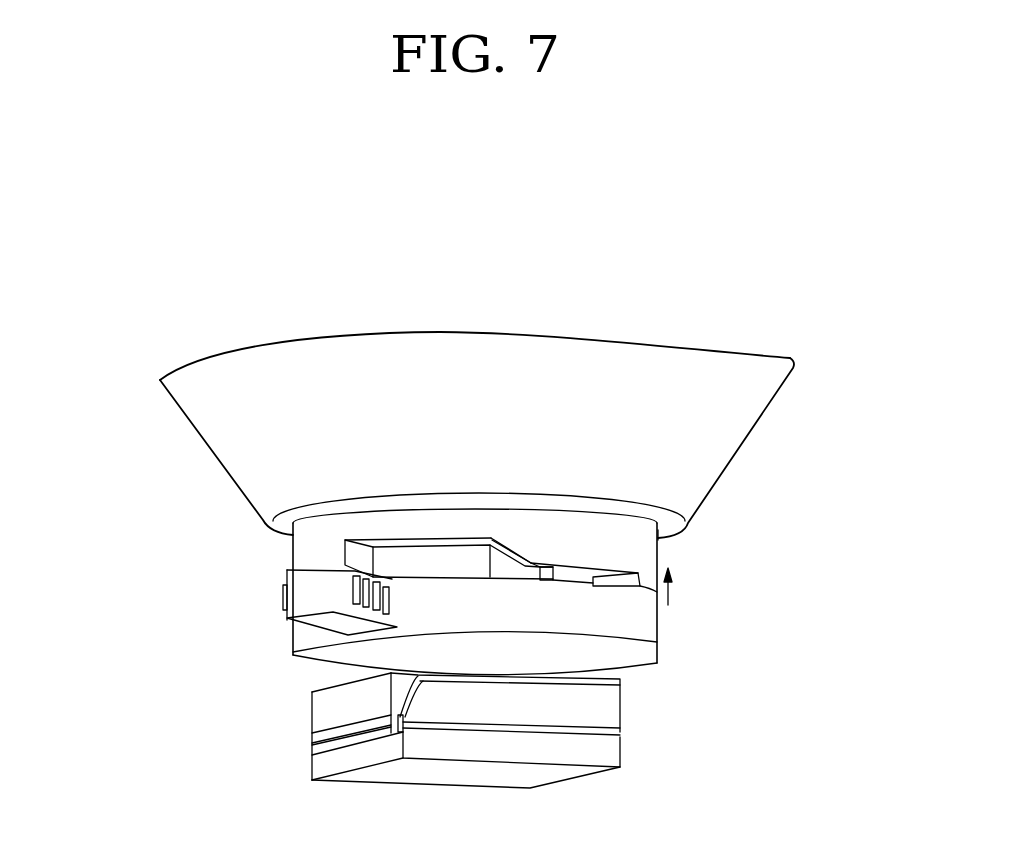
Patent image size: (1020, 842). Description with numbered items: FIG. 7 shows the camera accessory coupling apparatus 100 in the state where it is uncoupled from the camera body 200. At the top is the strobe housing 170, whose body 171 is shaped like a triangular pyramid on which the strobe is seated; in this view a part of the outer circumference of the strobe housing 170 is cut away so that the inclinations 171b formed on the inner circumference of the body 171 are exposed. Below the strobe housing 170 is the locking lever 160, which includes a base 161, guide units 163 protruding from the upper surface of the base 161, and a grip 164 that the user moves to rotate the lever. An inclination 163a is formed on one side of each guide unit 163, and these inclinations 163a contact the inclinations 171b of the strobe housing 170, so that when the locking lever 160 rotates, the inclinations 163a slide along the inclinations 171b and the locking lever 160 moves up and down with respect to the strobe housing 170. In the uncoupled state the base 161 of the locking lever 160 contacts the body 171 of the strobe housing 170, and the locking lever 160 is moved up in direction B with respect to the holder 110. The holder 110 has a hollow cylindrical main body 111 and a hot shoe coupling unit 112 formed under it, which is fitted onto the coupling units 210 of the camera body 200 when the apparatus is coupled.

The camera accessory coupling apparatus 100 is at (139, 310).
The holder 110 is at (294, 715).
The cylindrical main body 111 is at (385, 676).
The hot shoe coupling unit 112 is at (315, 747).
The locking lever 160 is at (667, 625).
The base 161 is at (648, 640).
The guide unit 163 is at (392, 557).
The inclination 163a is at (488, 546).
The grip 164 is at (300, 594).
The strobe housing 170 is at (487, 323).
The body 171 is at (686, 362).
The inclination 171b is at (505, 545).
The camera body 200 is at (645, 757).
The coupling unit 210 is at (615, 712).